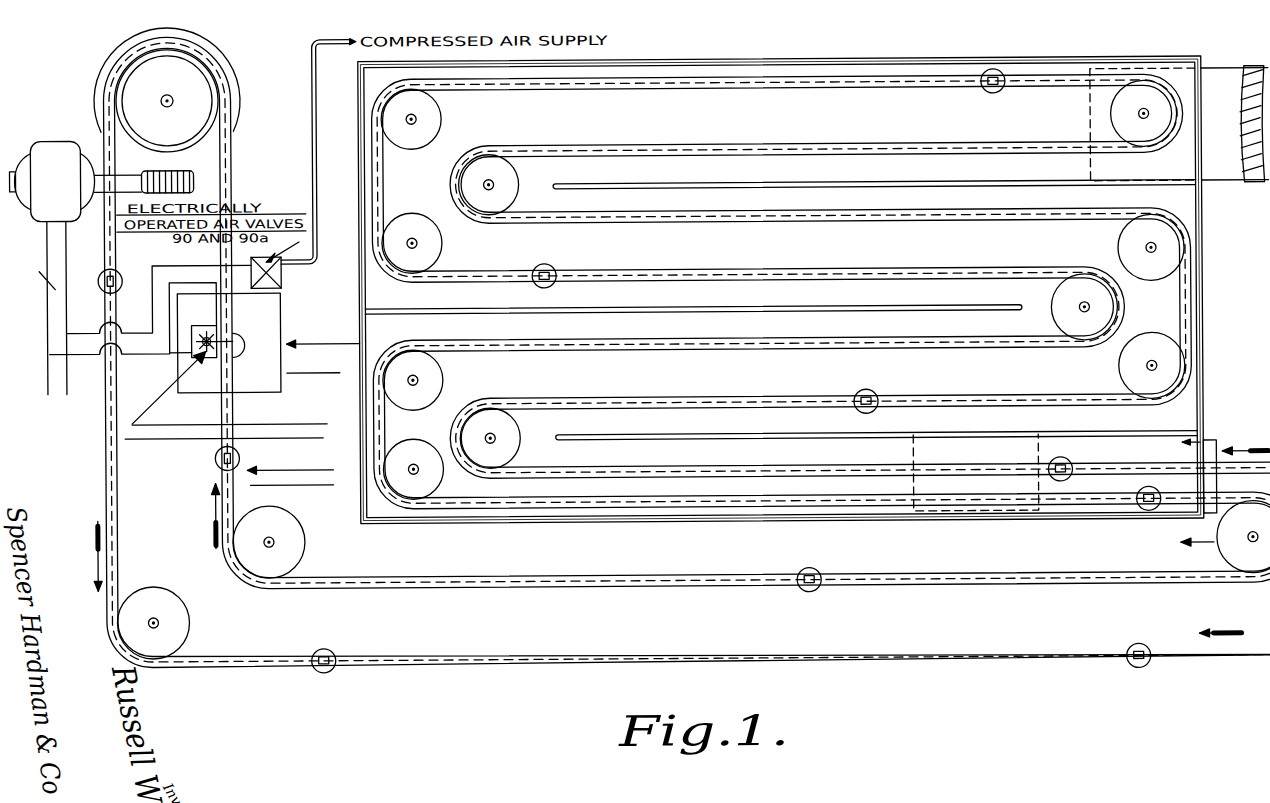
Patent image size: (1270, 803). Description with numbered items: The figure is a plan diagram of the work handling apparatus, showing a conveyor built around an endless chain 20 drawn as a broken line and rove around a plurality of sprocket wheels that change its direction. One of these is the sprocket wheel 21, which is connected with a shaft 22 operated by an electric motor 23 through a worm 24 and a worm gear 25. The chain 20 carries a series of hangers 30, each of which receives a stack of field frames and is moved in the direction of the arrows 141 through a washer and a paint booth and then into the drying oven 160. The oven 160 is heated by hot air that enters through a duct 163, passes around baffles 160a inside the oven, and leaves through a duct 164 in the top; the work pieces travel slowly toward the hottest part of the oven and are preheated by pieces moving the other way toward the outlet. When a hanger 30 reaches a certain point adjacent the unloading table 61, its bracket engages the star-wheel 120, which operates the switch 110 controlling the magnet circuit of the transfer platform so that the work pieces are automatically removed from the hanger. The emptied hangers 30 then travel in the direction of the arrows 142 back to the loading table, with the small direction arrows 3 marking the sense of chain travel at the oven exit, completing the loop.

The direction of travel arrows 3 is at (1186, 493).
The endless chain 20 is at (558, 402).
The sprocket wheel 21 is at (132, 86).
The shaft 22 is at (171, 97).
The electric motor 23 is at (50, 147).
The worm 24 is at (163, 170).
The worm gear 25 is at (221, 51).
The hangers 30 is at (118, 277).
The unloading table 61 is at (279, 315).
The switch 110 is at (208, 363).
The star-wheel 120 is at (207, 325).
The arrows 141 is at (1238, 455).
The arrows 142 is at (97, 563).
The drying oven 160 is at (720, 66).
The baffles 160a is at (736, 186).
The duct 163 is at (1231, 73).
The duct 164 is at (1038, 455).